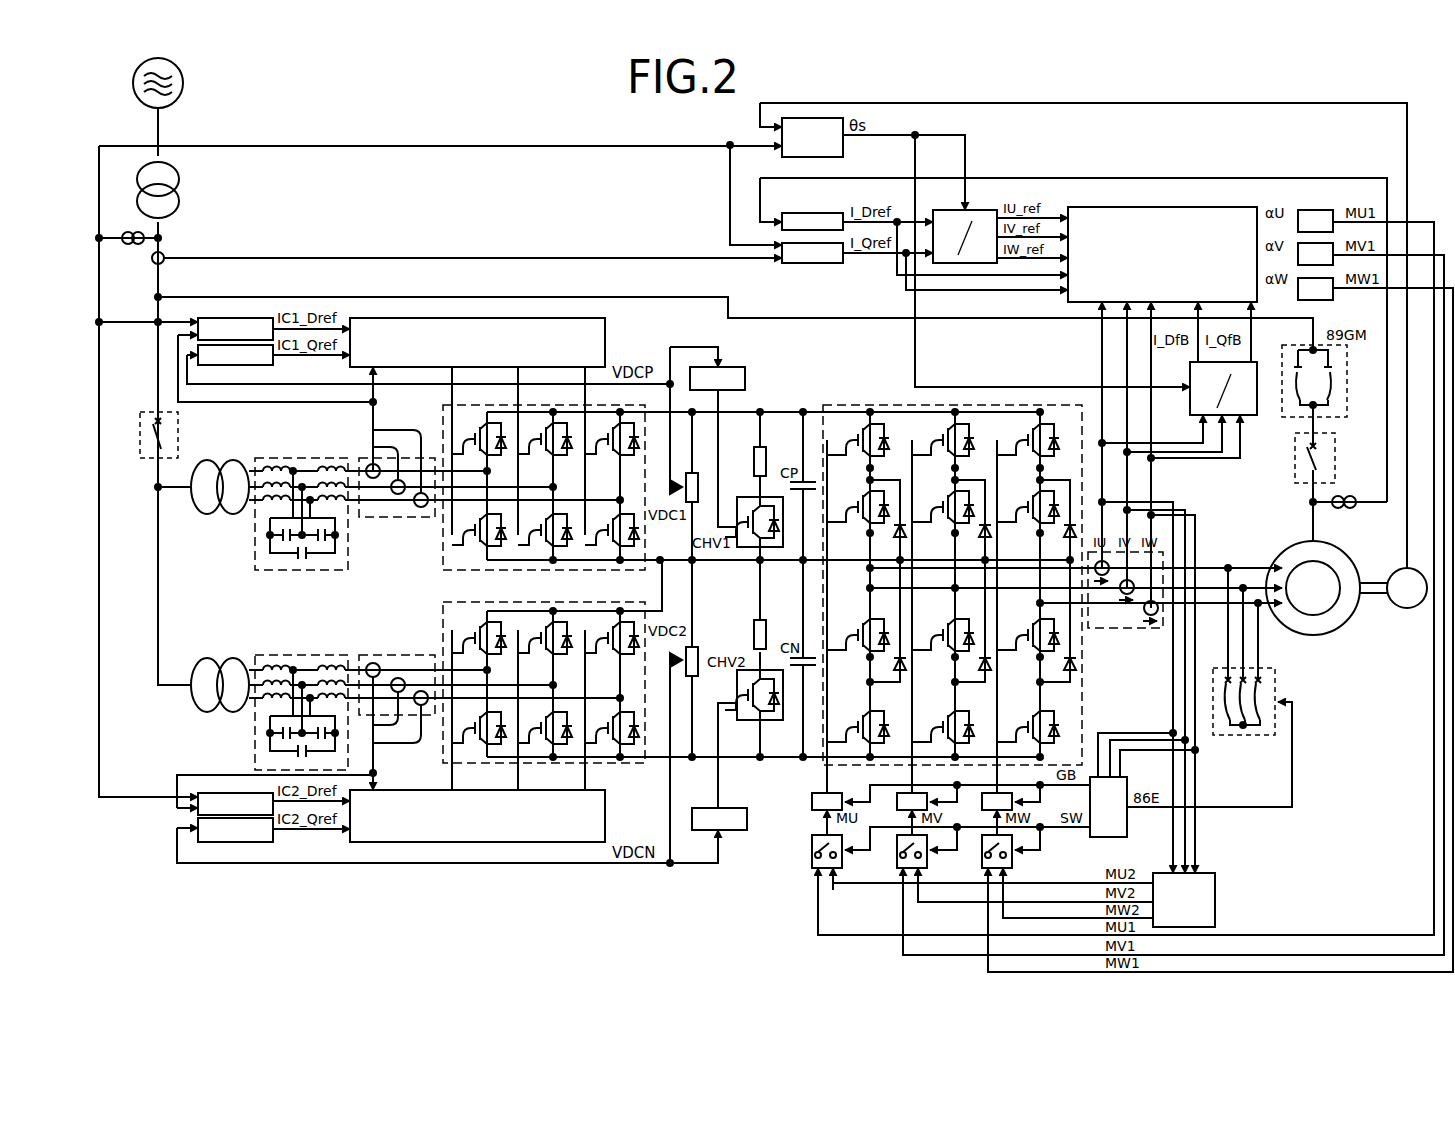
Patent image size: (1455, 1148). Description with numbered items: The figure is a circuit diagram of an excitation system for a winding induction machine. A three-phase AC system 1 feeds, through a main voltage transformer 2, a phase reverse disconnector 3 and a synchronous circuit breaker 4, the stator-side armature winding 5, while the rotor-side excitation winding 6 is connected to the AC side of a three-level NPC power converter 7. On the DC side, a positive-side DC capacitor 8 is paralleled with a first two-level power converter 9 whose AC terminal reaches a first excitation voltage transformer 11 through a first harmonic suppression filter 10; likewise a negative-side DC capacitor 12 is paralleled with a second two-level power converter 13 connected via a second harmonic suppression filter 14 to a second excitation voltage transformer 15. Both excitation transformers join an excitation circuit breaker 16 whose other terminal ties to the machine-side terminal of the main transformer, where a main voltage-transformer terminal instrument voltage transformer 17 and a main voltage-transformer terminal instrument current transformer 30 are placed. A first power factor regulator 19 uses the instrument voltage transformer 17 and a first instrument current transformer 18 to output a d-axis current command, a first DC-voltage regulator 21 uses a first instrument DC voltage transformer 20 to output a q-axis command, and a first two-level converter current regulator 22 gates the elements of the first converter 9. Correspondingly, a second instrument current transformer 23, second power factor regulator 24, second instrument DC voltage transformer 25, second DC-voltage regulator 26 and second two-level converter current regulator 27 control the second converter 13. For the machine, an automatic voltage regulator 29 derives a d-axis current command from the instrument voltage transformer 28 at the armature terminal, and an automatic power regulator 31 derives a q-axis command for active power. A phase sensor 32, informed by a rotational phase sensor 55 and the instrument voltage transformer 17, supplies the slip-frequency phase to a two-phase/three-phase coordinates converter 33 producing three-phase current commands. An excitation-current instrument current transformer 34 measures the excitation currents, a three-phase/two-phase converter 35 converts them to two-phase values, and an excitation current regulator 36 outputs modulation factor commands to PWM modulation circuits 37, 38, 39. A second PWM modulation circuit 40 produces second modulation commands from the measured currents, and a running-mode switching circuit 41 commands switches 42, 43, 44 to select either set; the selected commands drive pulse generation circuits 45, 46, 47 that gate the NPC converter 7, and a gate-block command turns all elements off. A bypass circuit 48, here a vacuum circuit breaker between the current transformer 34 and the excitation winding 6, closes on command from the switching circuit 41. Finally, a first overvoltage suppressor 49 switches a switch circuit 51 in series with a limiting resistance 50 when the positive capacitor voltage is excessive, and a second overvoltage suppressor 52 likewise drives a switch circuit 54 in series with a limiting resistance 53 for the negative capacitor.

The three-phase AC system 1 is at (183, 80).
The main voltage transformer 2 is at (177, 167).
The phase reverse disconnector (89GM) 3 is at (1366, 370).
The synchronous circuit breaker (52G) 4 is at (1003, 770).
The stator-side armature winding 5 is at (1291, 560).
The rotor-side excitation winding 6 is at (1330, 610).
The three-level NPC power converter 7 is at (846, 403).
The positive-side DC capacitor (CP) 8 is at (810, 490).
The first two-level power converter 9 is at (443, 548).
The first harmonic suppression filter 10 is at (305, 458).
The first excitation voltage transformer 11 is at (205, 514).
The negative-side DC capacitor (CN) 12 is at (810, 666).
The second two-level power converter 13 is at (443, 636).
The second harmonic suppression filter 14 is at (305, 655).
The second excitation voltage transformer 15 is at (205, 712).
The excitation circuit breaker (52E) 16 is at (178, 447).
The main voltage-transformer terminal instrument voltage transformer 17 is at (131, 245).
The first instrument current transformer 18 is at (378, 517).
The first power factor regulator (APFR1) 19 is at (243, 318).
The first instrument DC voltage transformer 20 is at (696, 473).
The first DC-voltage regulator (ADCVR1) 21 is at (243, 365).
The first two-level converter current regulator 22 is at (605, 326).
The second instrument current transformer 23 is at (378, 655).
The second power factor regulator (APFR2) 24 is at (243, 793).
The second instrument DC voltage transformer 25 is at (698, 650).
The second DC-voltage regulator (ADCVR2) 26 is at (243, 842).
The second two-level converter current regulator 27 is at (605, 800).
The instrument voltage transformer 28 is at (1344, 510).
The automatic voltage regulator (AVR) 29 is at (812, 213).
The main voltage-transformer terminal instrument current transformer 30 is at (152, 262).
The automatic power regulator (APR) 31 is at (812, 263).
The phase sensor 32 is at (843, 148).
The two-phase/three-phase coordinates converter 33 is at (975, 210).
The excitation-current instrument current transformer 34 is at (1131, 630).
The three-phase/two-phase converter 35 is at (1250, 362).
The excitation current regulator 36 is at (1180, 207).
The PWM modulation circuit 37 is at (1313, 210).
The PWM modulation circuit 38 is at (1333, 262).
The PWM modulation circuit 39 is at (1330, 300).
The second PWM modulation circuit 40 is at (1215, 888).
The running-mode switching circuit 41 is at (1115, 837).
The switch 42 is at (812, 856).
The switch 43 is at (897, 856).
The switch 44 is at (982, 856).
The pulse generation circuit 45 is at (812, 797).
The pulse generation circuit 46 is at (897, 797).
The pulse generation circuit 47 is at (982, 797).
The bypass circuit 48 is at (1275, 688).
The first overvoltage suppressor (OVP1) 49 is at (738, 367).
The limiting resistance 50 is at (766, 450).
The switch circuit (CHV1) 51 is at (737, 497).
The second overvoltage suppressor (OVP2) 52 is at (742, 808).
The limiting resistance 53 is at (766, 624).
The switch circuit (CHV2) 54 is at (765, 720).
The rotational phase sensor (PLG) 55 is at (1412, 608).